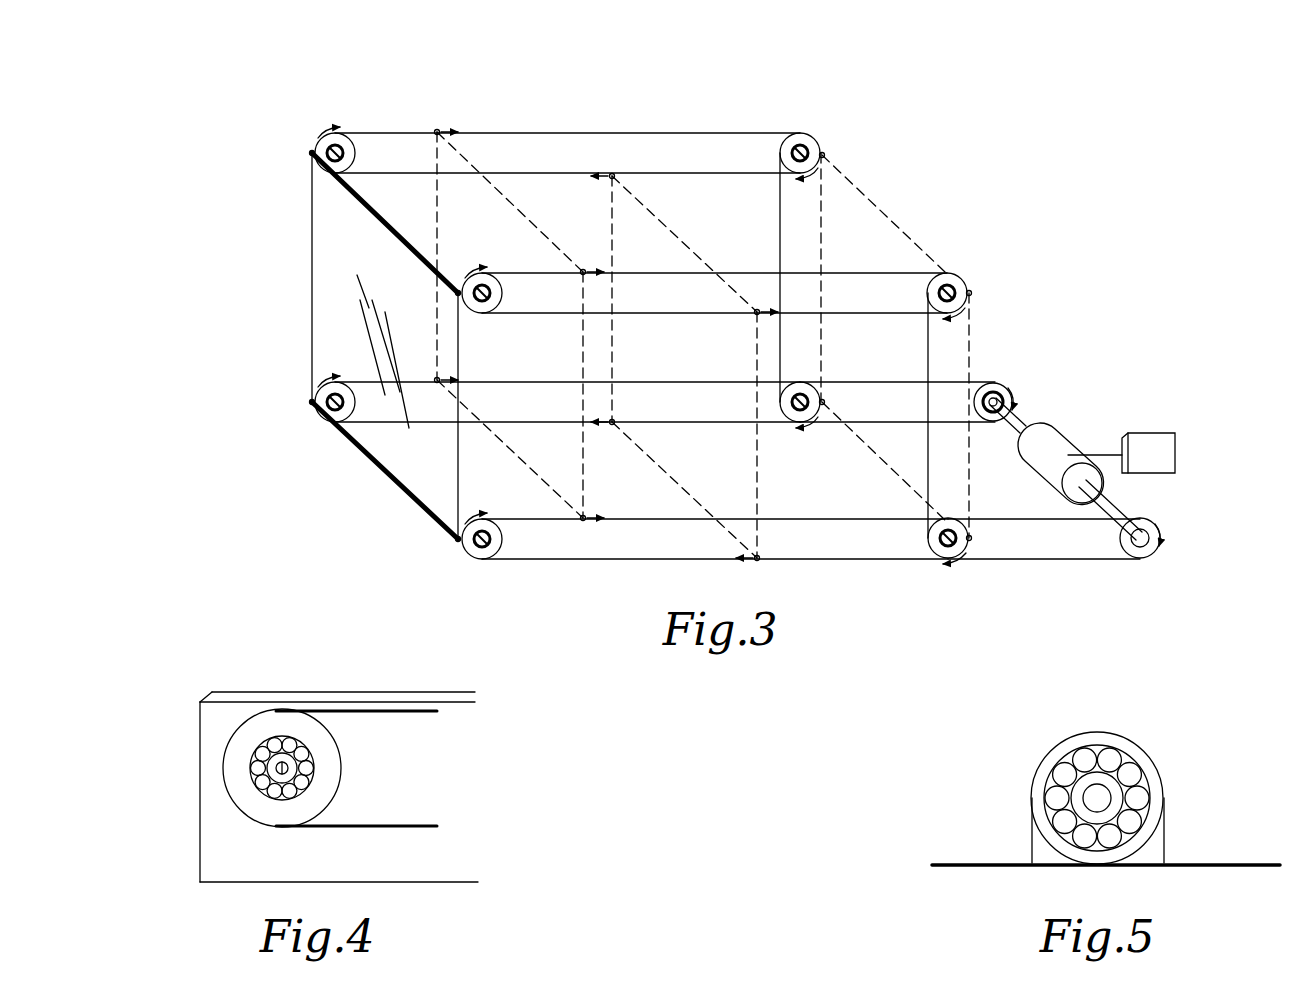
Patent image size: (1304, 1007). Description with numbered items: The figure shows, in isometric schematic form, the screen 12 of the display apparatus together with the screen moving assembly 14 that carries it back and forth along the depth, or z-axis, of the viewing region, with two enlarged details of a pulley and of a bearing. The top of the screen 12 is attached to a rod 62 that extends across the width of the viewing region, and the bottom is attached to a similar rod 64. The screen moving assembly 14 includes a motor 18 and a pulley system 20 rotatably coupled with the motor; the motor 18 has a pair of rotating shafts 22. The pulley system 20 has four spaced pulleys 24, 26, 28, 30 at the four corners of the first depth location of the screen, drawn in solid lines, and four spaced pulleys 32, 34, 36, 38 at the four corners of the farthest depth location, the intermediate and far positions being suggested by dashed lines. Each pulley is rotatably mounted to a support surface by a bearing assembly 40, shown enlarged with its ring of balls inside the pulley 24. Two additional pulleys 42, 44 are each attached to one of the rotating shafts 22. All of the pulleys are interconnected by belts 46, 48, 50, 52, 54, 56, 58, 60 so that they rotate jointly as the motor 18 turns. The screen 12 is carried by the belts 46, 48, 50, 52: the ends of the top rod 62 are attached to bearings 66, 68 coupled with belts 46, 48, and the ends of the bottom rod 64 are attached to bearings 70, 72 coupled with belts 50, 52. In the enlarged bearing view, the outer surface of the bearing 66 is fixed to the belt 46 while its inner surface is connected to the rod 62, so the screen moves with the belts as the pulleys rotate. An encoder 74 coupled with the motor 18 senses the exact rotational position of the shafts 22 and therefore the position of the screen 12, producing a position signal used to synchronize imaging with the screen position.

In FIG. 3, the screen 12 is at (325, 298).
In FIG. 3, the screen moving assembly 14 is at (1005, 135).
In FIG. 3, the motor 18 is at (1066, 452).
In FIG. 3, the pulley system 20 is at (250, 190).
In FIG. 3, the rotating shafts 22 is at (1027, 424).
In FIG. 3, the pulley 24 is at (346, 140).
In FIG. 4, the pulley 24 is at (275, 722).
In FIG. 3, the pulley 26 is at (480, 313).
In FIG. 3, the pulley 28 is at (478, 560).
In FIG. 3, the pulley 30 is at (330, 420).
In FIG. 3, the pulley 32 is at (812, 140).
In FIG. 3, the pulley 34 is at (960, 278).
In FIG. 3, the pulley 36 is at (934, 556).
In FIG. 3, the pulley 38 is at (790, 420).
In FIG. 4, the bearing assembly 40 is at (250, 774).
In FIG. 3, the pulley 42 is at (1005, 388).
In FIG. 3, the pulley 44 is at (1156, 526).
In FIG. 3, the belt 46 is at (543, 133).
In FIG. 4, the belt 46 is at (375, 826).
In FIG. 5, the belt 46 is at (1230, 865).
In FIG. 3, the belt 48 is at (840, 273).
In FIG. 3, the belt 50 is at (657, 422).
In FIG. 3, the belt 52 is at (625, 559).
In FIG. 3, the belt 54 is at (780, 224).
In FIG. 3, the belt 56 is at (928, 330).
In FIG. 3, the belt 58 is at (846, 382).
In FIG. 3, the belt 60 is at (1010, 559).
In FIG. 3, the rod 62 is at (380, 200).
In FIG. 5, the rod 62 is at (1090, 795).
In FIG. 3, the rod 64 is at (400, 470).
In FIG. 3, the bearing 66 is at (310, 151).
In FIG. 5, the bearing 66 is at (1135, 770).
In FIG. 3, the bearing 68 is at (456, 296).
In FIG. 3, the bearing 70 is at (310, 403).
In FIG. 3, the bearing 72 is at (456, 542).
In FIG. 3, the encoder 74 is at (1165, 436).